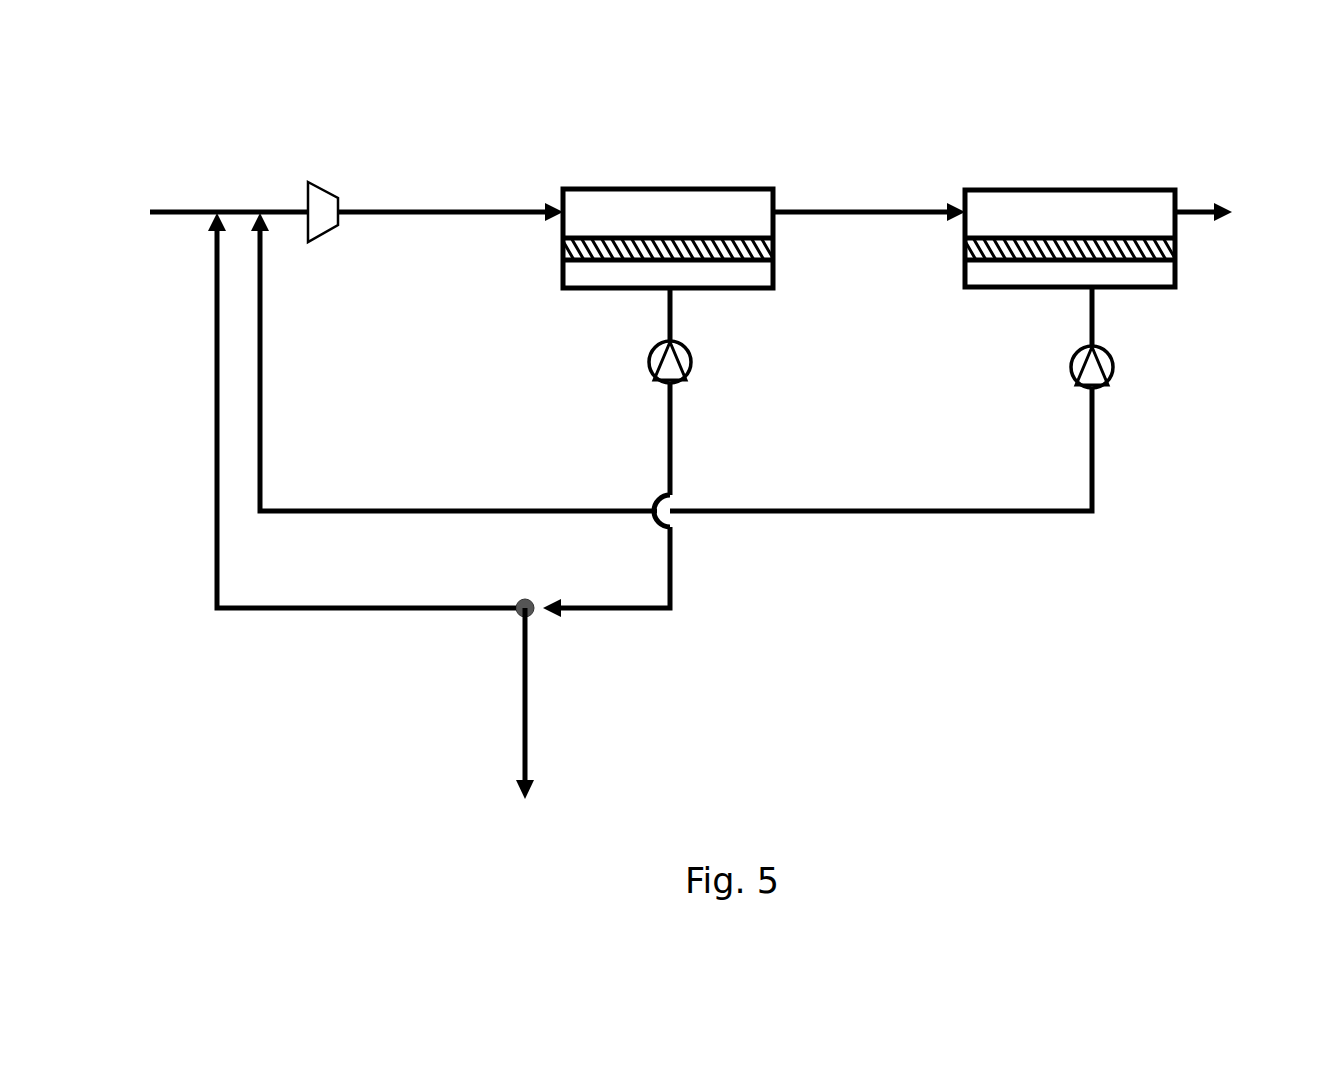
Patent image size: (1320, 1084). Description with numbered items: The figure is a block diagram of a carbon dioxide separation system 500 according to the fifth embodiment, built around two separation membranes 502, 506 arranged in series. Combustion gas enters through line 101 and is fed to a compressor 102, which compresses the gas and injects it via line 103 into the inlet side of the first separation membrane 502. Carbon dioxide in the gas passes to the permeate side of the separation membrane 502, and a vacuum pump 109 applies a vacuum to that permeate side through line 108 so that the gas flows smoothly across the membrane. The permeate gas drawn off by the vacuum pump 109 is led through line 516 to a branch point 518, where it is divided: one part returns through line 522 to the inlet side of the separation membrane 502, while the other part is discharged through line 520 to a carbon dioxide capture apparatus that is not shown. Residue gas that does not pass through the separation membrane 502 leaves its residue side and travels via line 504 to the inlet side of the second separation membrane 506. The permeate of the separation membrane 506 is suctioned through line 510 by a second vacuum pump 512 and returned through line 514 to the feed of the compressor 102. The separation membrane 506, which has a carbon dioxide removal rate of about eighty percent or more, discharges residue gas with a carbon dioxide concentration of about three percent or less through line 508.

The line 101 is at (205, 208).
The compressor 102 is at (320, 180).
The line 103 is at (413, 207).
The separation membrane 502 is at (618, 188).
The line 504 is at (845, 208).
The separation membrane 506 is at (1002, 187).
The line 508 is at (1193, 200).
The line 108 is at (262, 277).
The vacuum pump 109 is at (688, 373).
The permeate line from M2 510 is at (1102, 320).
The vacuum pump 512 is at (1117, 375).
The second permeate recycle line 514 is at (953, 513).
The combined permeate line 516 is at (673, 563).
The branch point 518 is at (515, 620).
The permeate discharge outlet 520 is at (537, 690).
The permeate recycle return line 522 is at (358, 613).
The carbon dioxide separation system 500 is at (1160, 627).